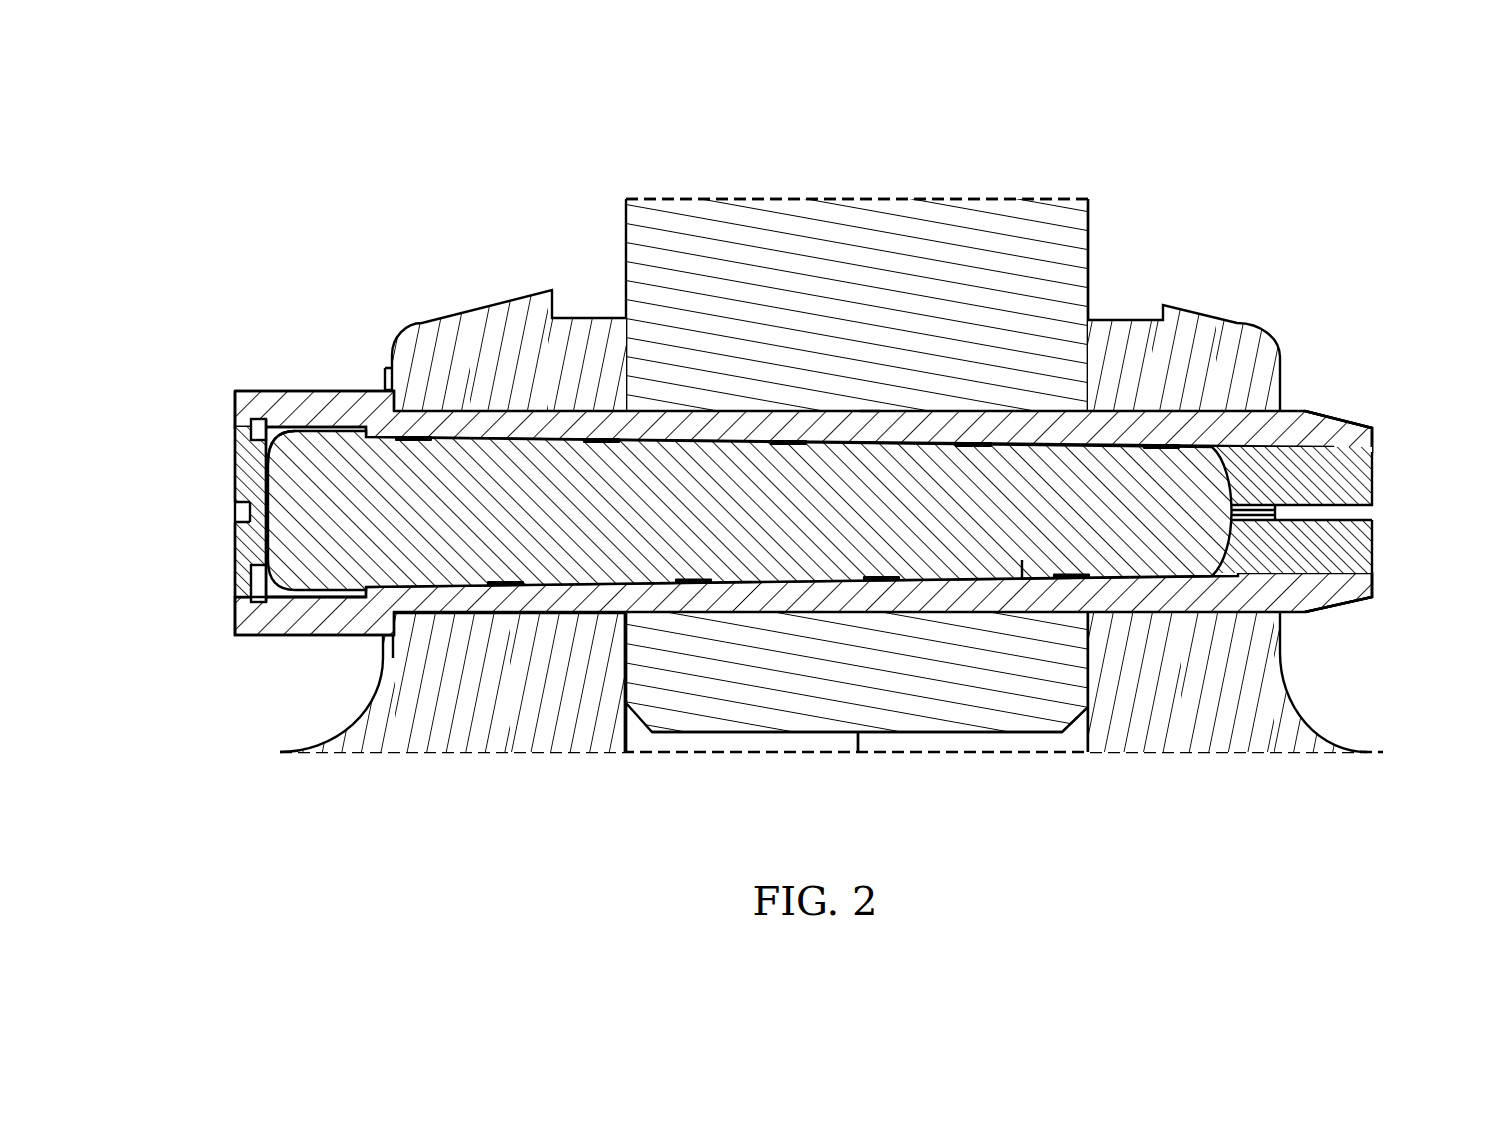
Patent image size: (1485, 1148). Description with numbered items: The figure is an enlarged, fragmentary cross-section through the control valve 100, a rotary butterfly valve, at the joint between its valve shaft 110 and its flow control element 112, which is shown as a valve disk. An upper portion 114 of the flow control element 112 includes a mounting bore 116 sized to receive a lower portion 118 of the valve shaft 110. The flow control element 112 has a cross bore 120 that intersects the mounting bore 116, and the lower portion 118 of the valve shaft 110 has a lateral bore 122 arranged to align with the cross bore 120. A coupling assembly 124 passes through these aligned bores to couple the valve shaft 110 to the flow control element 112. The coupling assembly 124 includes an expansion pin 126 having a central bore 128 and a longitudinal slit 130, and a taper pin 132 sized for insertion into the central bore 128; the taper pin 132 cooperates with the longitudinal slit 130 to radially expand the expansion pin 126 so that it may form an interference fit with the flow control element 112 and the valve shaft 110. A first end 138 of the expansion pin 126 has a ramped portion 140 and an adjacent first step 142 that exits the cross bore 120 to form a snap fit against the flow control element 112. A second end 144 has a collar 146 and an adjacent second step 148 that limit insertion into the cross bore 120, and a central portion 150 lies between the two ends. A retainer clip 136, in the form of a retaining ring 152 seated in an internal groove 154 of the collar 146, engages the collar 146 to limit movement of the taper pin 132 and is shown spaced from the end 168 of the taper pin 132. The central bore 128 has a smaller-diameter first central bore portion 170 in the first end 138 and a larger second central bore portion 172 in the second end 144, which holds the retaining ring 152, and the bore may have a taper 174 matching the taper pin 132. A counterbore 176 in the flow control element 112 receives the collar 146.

The control valve 100 is at (298, 124).
The valve shaft 110 is at (626, 244).
The flow control element 112 is at (487, 737).
The upper portion 114 is at (1303, 738).
The mounting bore 116 is at (627, 345).
The lower portion 118 is at (1088, 244).
The cross bore 120 is at (613, 615).
The lateral bore 122 is at (858, 613).
The coupling assembly 124 is at (197, 393).
The expansion pin 126 is at (968, 600).
The central bore 128 is at (458, 437).
The longitudinal slit 130 is at (1367, 512).
The taper pin 132 is at (727, 528).
The retainer clip 136 is at (256, 557).
The first end 138 is at (1322, 598).
The ramped portion 140 is at (1328, 433).
The first step 142 is at (1273, 390).
The second end 144 is at (247, 395).
The collar 146 is at (247, 625).
The second step 148 is at (403, 623).
The central portion 150 is at (867, 428).
The retaining ring 152 is at (256, 513).
The internal groove 154 is at (248, 598).
The end 168 is at (278, 463).
The first central bore portion 170 is at (1367, 577).
The second central bore portion 172 is at (323, 593).
The taper 174 is at (1022, 578).
The counterbore 176 is at (387, 400).